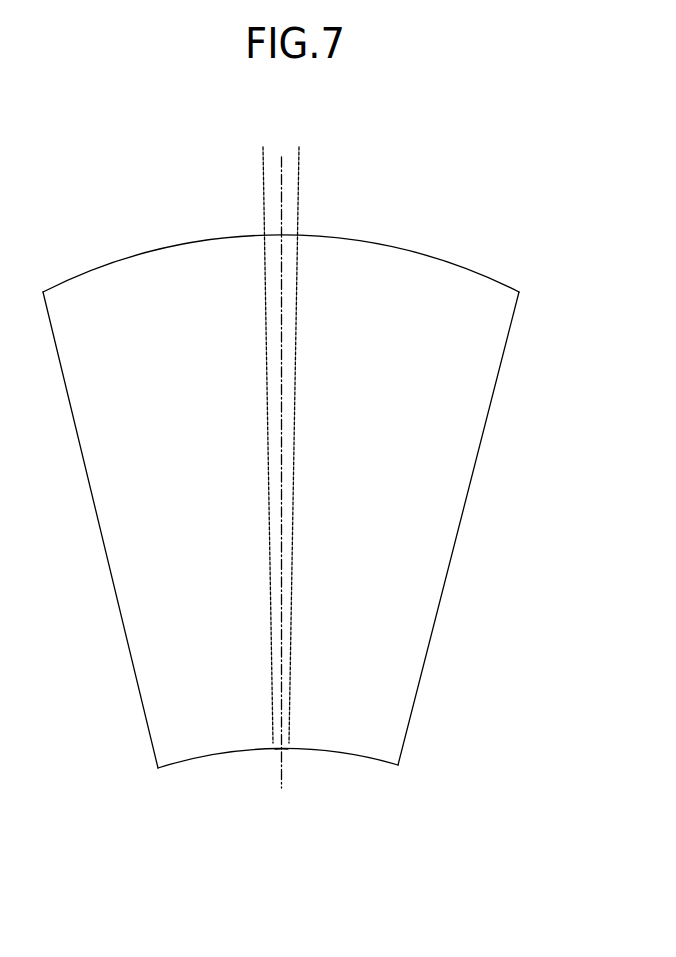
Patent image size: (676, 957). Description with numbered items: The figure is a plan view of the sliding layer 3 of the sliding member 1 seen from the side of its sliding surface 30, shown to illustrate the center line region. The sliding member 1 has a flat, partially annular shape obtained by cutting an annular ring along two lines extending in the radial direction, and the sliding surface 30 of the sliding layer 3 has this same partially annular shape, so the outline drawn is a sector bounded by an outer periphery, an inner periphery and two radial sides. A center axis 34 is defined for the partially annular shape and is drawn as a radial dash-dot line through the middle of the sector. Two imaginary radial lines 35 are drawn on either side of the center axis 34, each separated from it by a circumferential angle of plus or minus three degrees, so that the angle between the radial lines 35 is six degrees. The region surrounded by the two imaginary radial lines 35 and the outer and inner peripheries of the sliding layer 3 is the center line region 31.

The sliding member 1 is at (430, 234).
The sliding layer 3 is at (433, 542).
The sliding surface 30 is at (453, 428).
The center line region 31 is at (287, 365).
The center axis 34 is at (283, 780).
The imaginary radial lines 35 is at (261, 155).